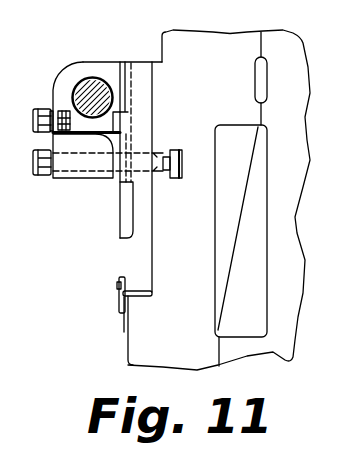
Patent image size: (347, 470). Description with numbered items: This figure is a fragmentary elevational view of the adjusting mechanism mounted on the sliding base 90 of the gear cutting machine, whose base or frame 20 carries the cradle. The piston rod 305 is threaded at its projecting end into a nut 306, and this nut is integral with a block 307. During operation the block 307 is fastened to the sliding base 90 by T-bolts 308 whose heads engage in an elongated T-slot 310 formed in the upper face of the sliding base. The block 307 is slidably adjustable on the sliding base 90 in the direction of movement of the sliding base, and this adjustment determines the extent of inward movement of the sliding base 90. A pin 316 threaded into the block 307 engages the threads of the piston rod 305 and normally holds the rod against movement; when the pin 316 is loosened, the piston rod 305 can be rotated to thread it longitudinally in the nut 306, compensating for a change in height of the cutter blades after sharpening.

The base 20 is at (286, 341).
The sliding base 90 is at (132, 351).
The piston rod 305 is at (81, 83).
The nut 306 is at (101, 67).
The block 307 is at (131, 243).
The T-bolts 308 is at (92, 172).
The T-slot 310 is at (184, 154).
The pin 316 is at (70, 113).